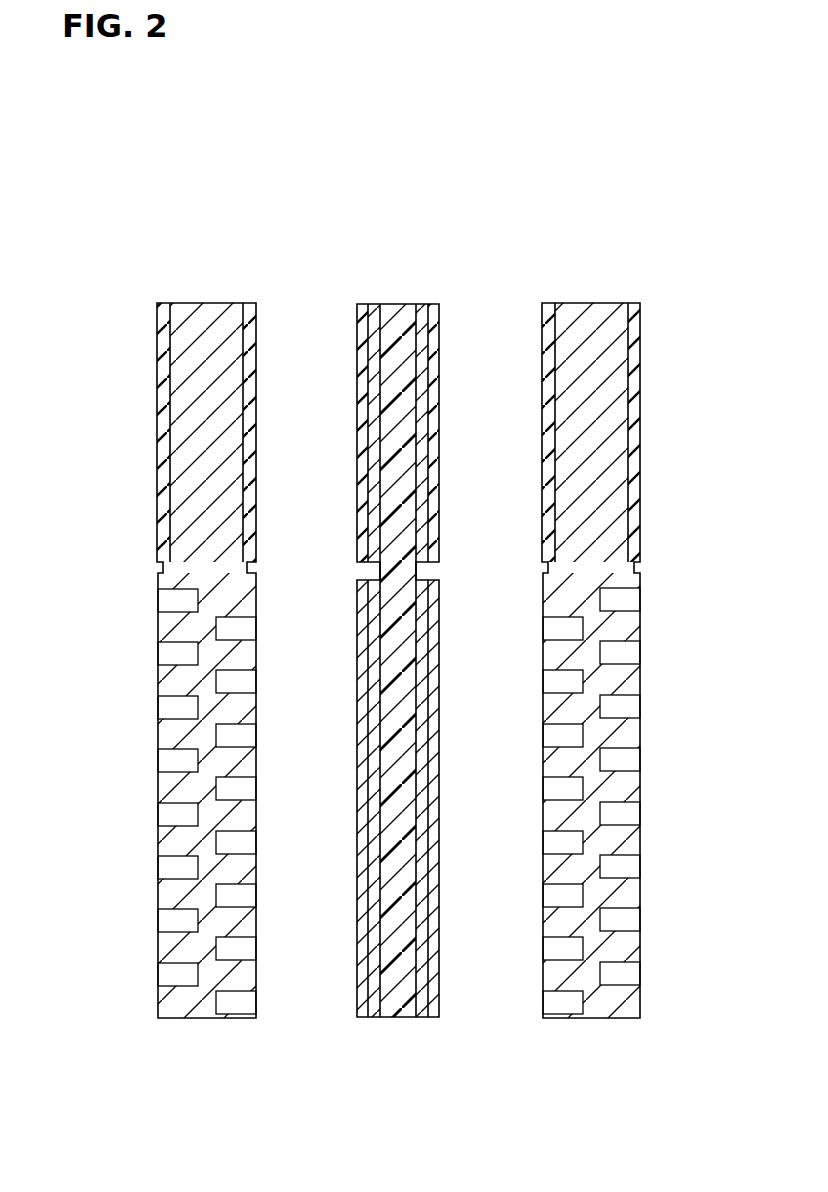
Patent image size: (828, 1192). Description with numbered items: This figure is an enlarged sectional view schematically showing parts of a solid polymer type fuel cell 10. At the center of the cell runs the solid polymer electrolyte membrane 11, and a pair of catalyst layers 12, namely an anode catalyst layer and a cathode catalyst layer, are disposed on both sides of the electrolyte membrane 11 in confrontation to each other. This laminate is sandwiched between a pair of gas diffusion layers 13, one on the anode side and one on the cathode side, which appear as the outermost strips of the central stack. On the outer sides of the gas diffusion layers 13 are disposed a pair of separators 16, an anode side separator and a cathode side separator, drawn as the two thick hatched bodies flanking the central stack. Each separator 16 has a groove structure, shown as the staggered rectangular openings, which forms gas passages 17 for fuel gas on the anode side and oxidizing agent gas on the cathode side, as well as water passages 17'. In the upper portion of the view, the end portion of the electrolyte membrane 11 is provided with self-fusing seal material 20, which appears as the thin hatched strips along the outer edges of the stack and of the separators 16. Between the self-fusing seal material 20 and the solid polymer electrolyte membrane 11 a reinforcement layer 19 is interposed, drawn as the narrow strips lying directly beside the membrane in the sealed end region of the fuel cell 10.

The solid polymer type fuel cell 10 is at (141, 243).
The solid polymer electrolyte membrane 11 is at (404, 1018).
The catalyst layers 12 is at (378, 1018).
The gas diffusion layers 13 is at (359, 950).
The separators 16 is at (196, 1019).
The gas passage 17 is at (399, 815).
The water passage 17' is at (403, 787).
The reinforcement layer 19 is at (375, 304).
The self-fusing seal material 20 is at (158, 466).